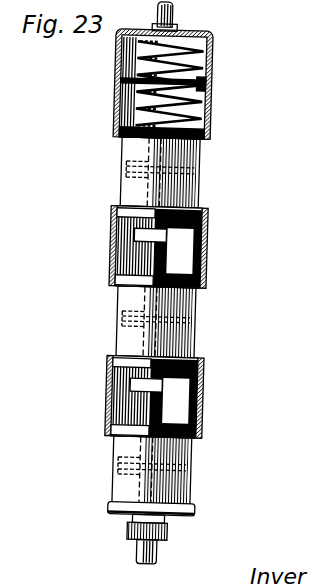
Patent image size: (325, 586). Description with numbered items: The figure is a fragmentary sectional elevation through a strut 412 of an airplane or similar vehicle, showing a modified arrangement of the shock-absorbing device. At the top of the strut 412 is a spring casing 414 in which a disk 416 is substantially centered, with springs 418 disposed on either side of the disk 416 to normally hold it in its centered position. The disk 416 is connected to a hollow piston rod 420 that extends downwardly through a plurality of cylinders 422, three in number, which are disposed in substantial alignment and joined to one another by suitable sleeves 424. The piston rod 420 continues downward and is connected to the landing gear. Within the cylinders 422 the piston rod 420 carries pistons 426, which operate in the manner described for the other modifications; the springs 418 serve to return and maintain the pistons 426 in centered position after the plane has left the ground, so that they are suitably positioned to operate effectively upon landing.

The strut 412 is at (173, 11).
The spring casing 414 is at (213, 33).
The disk 416 is at (207, 96).
The springs 418 is at (118, 44).
The hollow piston rod 420 is at (200, 154).
The cylinders 422 is at (203, 188).
The sleeves 424 is at (207, 247).
The pistons 426 is at (118, 322).